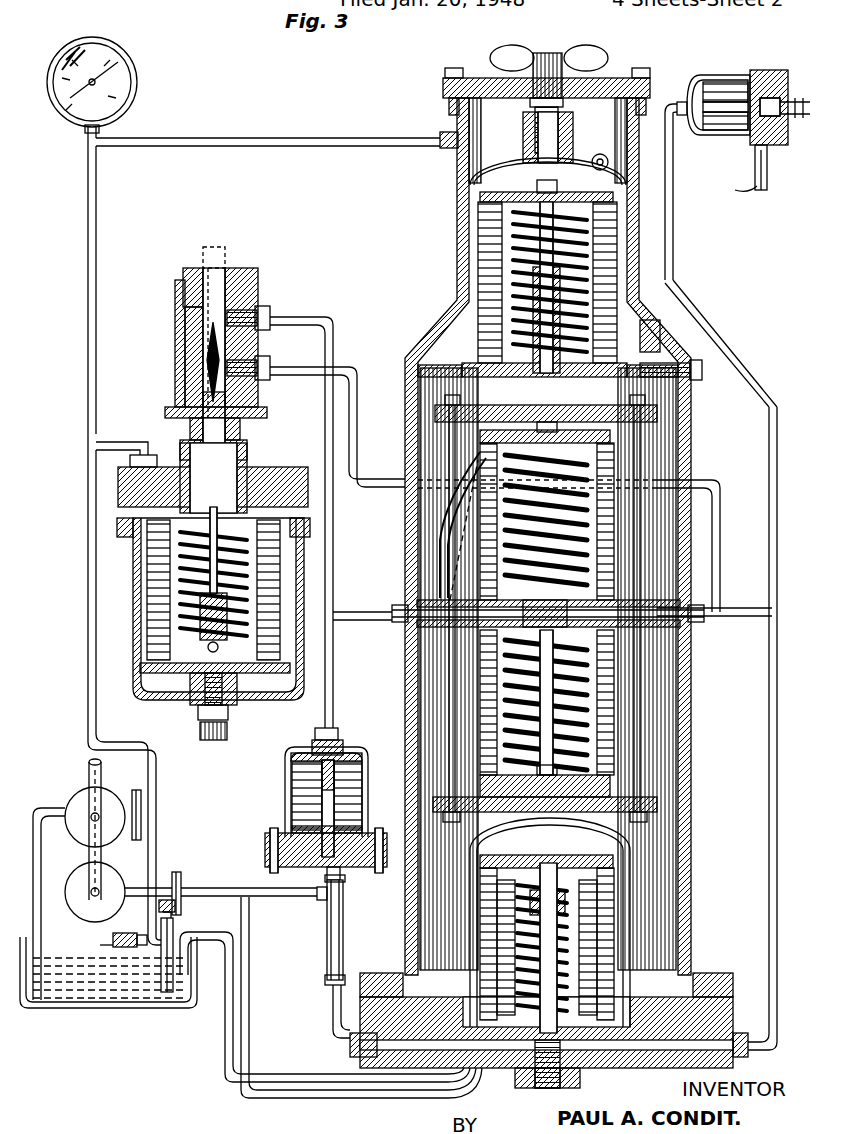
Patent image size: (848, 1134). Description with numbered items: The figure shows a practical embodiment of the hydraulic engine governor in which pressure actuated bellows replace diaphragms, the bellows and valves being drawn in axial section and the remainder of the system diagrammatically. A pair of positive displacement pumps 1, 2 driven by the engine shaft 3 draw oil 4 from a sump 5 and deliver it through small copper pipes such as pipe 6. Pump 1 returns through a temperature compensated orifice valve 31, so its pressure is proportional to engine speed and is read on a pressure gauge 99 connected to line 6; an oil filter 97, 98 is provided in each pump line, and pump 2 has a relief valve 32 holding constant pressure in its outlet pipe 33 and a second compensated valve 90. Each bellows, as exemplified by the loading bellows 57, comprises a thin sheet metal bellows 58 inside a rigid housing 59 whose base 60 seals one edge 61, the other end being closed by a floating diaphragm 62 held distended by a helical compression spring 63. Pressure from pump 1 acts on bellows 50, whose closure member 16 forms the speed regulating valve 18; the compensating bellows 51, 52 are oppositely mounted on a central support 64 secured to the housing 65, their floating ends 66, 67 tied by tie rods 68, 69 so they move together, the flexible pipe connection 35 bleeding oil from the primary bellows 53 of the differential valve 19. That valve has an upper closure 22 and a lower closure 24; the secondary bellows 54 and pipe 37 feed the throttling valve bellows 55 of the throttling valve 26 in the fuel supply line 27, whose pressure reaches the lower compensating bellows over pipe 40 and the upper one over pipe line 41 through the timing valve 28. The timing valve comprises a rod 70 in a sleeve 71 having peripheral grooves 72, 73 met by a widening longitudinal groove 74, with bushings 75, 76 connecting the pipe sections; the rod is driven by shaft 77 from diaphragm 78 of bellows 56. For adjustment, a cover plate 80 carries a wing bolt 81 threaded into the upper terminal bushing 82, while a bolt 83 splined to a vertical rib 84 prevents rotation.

The positive displacement pump 1 is at (72, 832).
The positive displacement pump 2 is at (84, 910).
The engine shaft 3 is at (100, 765).
The oil 4 is at (196, 983).
The sump 5 is at (184, 1010).
The pipe 6 is at (272, 140).
The closure member 16 is at (545, 285).
The speed regulating valve 18 is at (406, 388).
The differential valve 19 is at (622, 860).
The upper valve closure 22 is at (600, 876).
The lower valve closure 24 is at (580, 1072).
The throttling valve 26 is at (772, 100).
The fuel supply line 27 is at (768, 178).
The timing valve 28 is at (258, 272).
The valve 31 is at (174, 938).
The relief valve 32 is at (125, 950).
The outlet pipe 33 is at (350, 1094).
The flexible pipe connection 35 is at (440, 674).
The pipe 37 is at (769, 754).
The pipe 40 is at (700, 616).
The pipe line 41 is at (327, 352).
The bellows 50 is at (478, 232).
The compensating bellows 51 is at (450, 542).
The compensating bellows 52 is at (480, 716).
The primary bellows 53 is at (600, 922).
The secondary bellows 54 is at (580, 950).
The throttling valve bellows 55 is at (706, 78).
The bellows 56 is at (147, 579).
The loading bellows 57 is at (312, 746).
The sheet metal bellows 58 is at (325, 797).
The rigid metal housing 59 is at (292, 829).
The base 60 is at (265, 855).
The edge 61 is at (325, 874).
The floating diaphragm 62 is at (288, 754).
The helical compression spring 63 is at (292, 784).
The central support 64 is at (660, 640).
The housing 65 is at (457, 198).
The floating diaphragm end 66 is at (657, 412).
The floating diaphragm end 67 is at (657, 805).
The tie rod 68 is at (655, 755).
The tie rod 69 is at (440, 436).
The rod 70 is at (223, 272).
The sleeve 71 is at (180, 297).
The peripheral groove 72 is at (195, 322).
The peripheral groove 73 is at (208, 358).
The longitudinal groove 74 is at (204, 386).
The bushing 75 is at (262, 310).
The bushing 76 is at (262, 364).
The shaft 77 is at (247, 452).
The diaphragm 78 is at (190, 687).
The cover plate 80 is at (612, 78).
The wing bolt 81 is at (492, 56).
The upper terminal bushing 82 is at (522, 150).
The bolt 83 is at (702, 372).
The vertical rib 84 is at (645, 355).
The valve 90 is at (343, 910).
The oil filter 97 is at (135, 842).
The oil filter 98 is at (188, 857).
The pressure gauge 99 is at (118, 80).